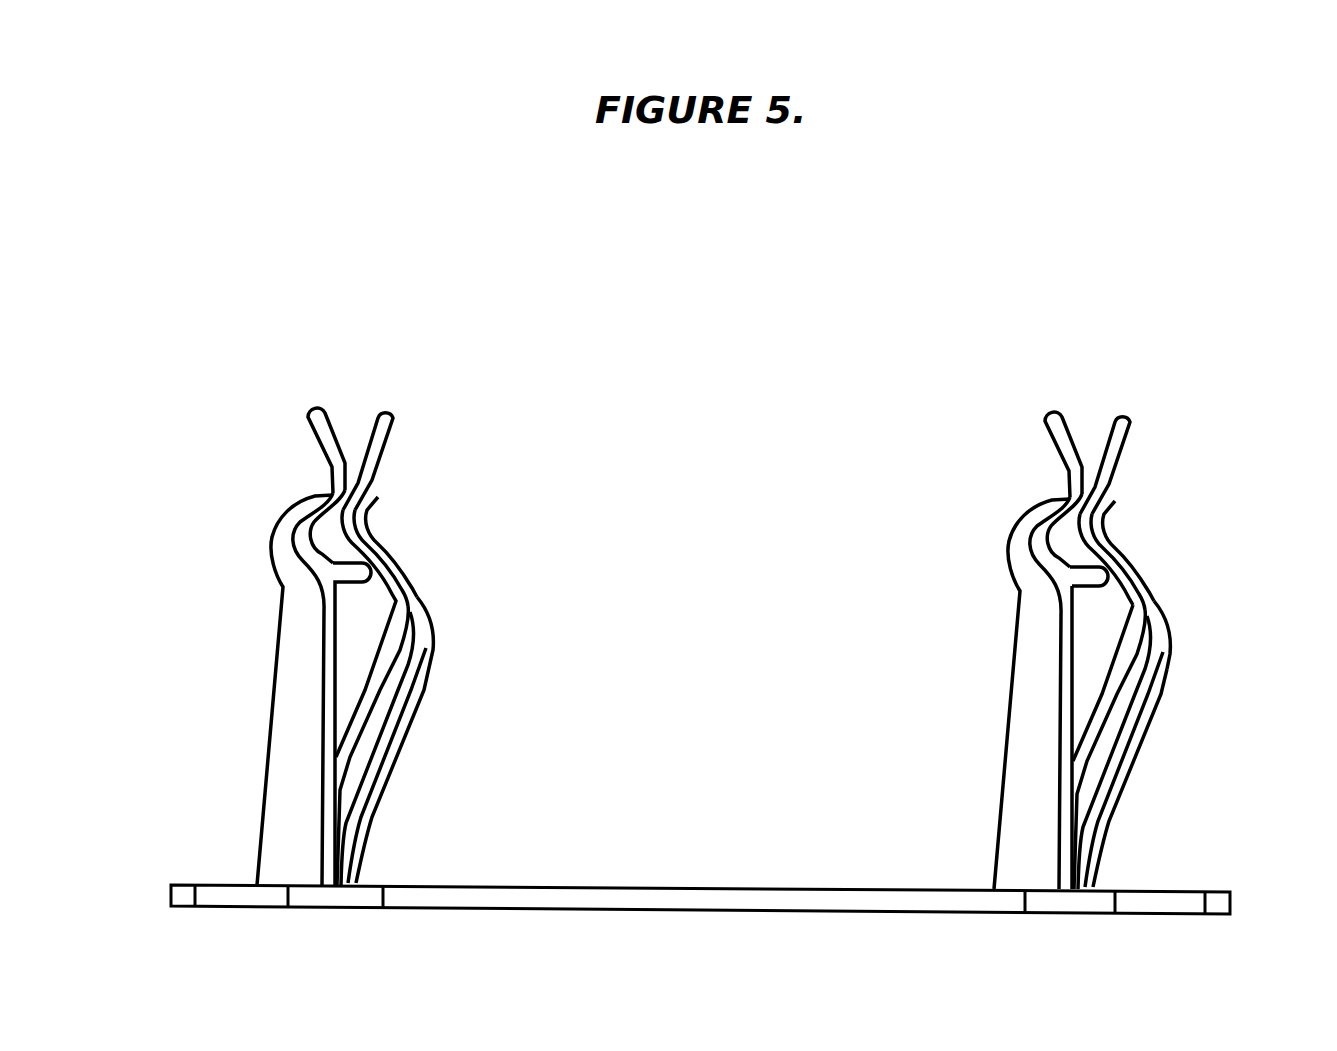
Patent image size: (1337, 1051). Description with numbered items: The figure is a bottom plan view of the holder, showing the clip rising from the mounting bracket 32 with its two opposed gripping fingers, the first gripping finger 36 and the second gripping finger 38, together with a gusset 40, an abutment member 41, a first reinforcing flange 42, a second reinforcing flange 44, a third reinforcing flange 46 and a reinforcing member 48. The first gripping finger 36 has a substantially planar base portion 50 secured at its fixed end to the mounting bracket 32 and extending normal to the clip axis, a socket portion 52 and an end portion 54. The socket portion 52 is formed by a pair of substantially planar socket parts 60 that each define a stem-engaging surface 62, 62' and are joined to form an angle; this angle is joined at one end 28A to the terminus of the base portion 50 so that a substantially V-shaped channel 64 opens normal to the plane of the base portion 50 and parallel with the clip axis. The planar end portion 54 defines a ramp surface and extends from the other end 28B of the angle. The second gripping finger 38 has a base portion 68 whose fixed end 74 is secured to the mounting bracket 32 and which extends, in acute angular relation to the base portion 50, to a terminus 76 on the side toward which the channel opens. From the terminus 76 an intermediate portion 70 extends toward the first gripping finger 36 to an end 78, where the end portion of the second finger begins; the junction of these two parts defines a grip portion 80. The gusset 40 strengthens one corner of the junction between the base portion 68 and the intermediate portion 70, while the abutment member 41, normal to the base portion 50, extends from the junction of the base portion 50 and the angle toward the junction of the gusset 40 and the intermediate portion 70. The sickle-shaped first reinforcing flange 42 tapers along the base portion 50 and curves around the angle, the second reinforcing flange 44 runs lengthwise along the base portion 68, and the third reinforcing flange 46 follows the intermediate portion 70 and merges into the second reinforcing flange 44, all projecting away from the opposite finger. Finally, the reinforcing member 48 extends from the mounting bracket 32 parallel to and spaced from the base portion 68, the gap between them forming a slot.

The one end of angle 28A is at (310, 594).
The other end of angle 28B is at (323, 477).
The grip portion 80 is at (318, 539).
The stem-engaging surface 62 is at (421, 717).
The stem-engaging surface 62' is at (414, 461).
The third reinforcing flange 46 is at (368, 532).
The second reinforcing flange 44 is at (392, 653).
The mounting bracket 32 is at (740, 893).
The first gripping finger 36 is at (944, 554).
The second gripping finger 38 is at (1192, 575).
The end portion 54 is at (1060, 445).
The socket portion 52 is at (931, 536).
The socket parts 60 is at (1068, 492).
The abutment member 41 is at (1088, 596).
The base portion 50 is at (1067, 727).
The first reinforcing flange 42 is at (1017, 793).
The V-shaped channel 64 is at (1073, 553).
The end of intermediate portion 78 is at (1113, 543).
The intermediate portion 70 is at (1110, 575).
The terminus 76 is at (1153, 613).
The gusset 40 is at (1158, 637).
The base portion 68 is at (1107, 703).
The reinforcing member 48 is at (1117, 783).
The fixed end 74 is at (1080, 798).